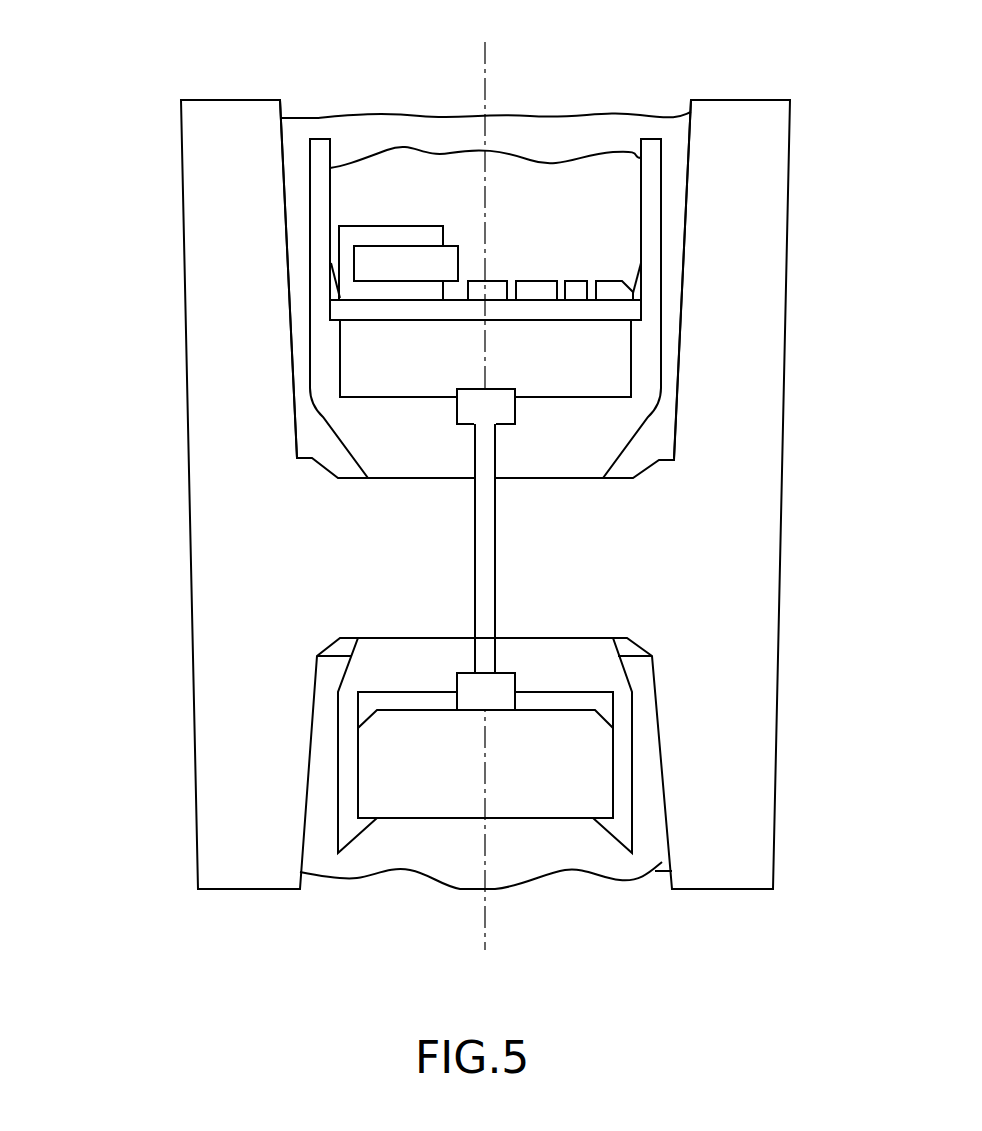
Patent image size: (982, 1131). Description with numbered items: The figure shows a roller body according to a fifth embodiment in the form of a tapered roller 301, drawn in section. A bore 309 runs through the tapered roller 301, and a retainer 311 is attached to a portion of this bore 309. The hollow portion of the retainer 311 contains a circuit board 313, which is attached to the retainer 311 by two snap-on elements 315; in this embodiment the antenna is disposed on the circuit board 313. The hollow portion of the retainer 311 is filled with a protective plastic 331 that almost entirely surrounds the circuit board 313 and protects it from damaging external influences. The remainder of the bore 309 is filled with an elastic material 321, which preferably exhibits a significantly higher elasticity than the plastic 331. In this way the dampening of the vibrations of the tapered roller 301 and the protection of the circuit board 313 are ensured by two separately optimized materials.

The tapered roller 301 is at (144, 178).
The bore 309 is at (297, 108).
The retainer 311 is at (322, 150).
The circuit board 313 is at (400, 262).
The snap-on elements 315 is at (641, 272).
The elastic material 321 is at (528, 132).
The protective plastic 331 is at (570, 225).